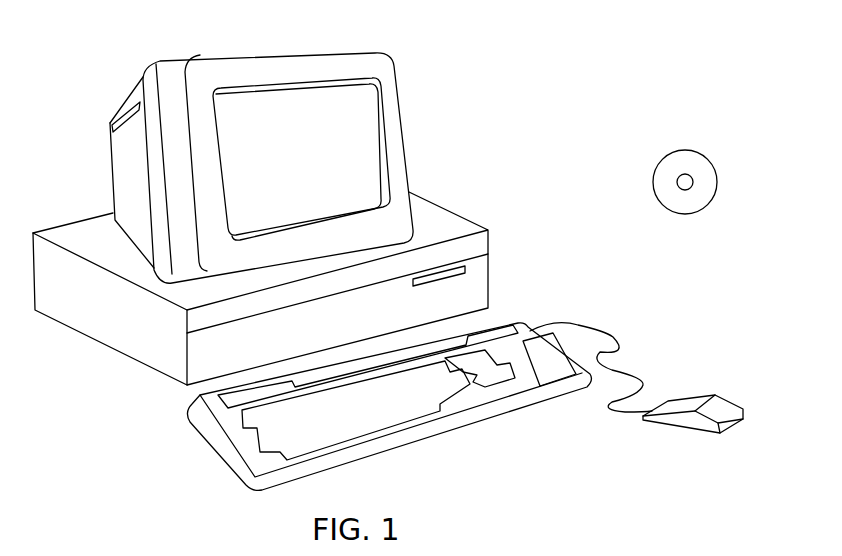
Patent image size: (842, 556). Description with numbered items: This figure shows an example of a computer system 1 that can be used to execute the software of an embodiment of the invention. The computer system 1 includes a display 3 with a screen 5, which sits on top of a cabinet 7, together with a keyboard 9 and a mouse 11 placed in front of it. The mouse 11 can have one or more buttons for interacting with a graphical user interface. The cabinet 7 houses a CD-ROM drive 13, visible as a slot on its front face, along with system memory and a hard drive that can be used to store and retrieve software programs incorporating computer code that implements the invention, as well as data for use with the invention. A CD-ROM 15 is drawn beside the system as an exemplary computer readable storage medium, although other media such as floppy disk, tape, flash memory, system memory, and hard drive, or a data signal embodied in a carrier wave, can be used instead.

The computer system 1 is at (603, 30).
The display 3 is at (408, 167).
The screen 5 is at (367, 117).
The cabinet 7 is at (150, 370).
The keyboard 9 is at (390, 445).
The mouse 11 is at (733, 400).
The CD-ROM drive 13 is at (467, 262).
The CD-ROM 15 is at (702, 150).